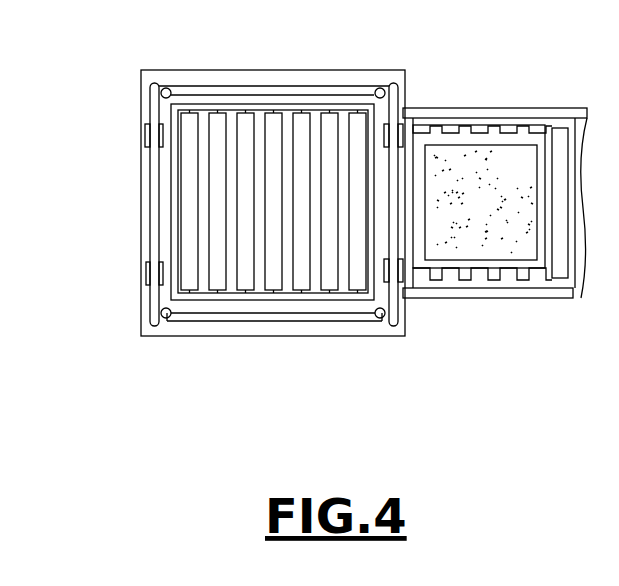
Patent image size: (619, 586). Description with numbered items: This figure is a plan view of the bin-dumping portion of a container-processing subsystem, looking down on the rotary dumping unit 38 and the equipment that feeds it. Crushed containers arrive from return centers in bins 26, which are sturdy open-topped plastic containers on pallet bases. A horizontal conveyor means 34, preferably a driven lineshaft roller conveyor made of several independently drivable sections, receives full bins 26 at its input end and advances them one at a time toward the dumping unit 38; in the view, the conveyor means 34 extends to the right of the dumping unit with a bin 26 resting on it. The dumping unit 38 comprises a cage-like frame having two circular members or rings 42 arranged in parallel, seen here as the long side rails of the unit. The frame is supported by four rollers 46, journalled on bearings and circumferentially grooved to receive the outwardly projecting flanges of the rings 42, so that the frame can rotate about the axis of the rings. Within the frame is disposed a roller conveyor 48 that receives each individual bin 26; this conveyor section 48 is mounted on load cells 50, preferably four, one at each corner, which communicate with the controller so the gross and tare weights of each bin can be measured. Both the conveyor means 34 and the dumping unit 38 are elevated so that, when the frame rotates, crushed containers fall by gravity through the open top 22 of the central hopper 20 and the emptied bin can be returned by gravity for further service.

The central hopper 20 is at (237, 70).
The open top 22 is at (280, 77).
The bin 26 is at (490, 135).
The horizontal conveyor means 34 is at (560, 108).
The rotary dumping unit 38 is at (96, 228).
The circular members or rings 42 is at (150, 93).
The rollers 46 is at (147, 140).
The roller conveyor 48 is at (275, 325).
The load cells 50 is at (167, 88).